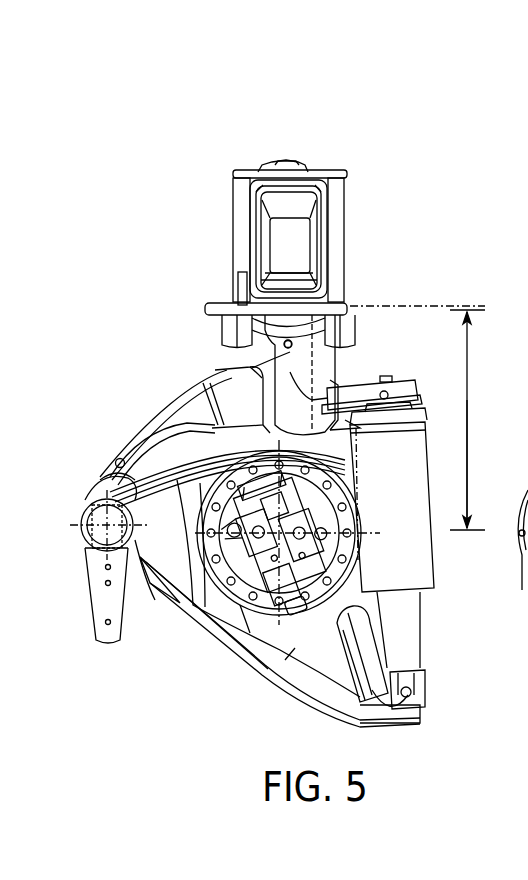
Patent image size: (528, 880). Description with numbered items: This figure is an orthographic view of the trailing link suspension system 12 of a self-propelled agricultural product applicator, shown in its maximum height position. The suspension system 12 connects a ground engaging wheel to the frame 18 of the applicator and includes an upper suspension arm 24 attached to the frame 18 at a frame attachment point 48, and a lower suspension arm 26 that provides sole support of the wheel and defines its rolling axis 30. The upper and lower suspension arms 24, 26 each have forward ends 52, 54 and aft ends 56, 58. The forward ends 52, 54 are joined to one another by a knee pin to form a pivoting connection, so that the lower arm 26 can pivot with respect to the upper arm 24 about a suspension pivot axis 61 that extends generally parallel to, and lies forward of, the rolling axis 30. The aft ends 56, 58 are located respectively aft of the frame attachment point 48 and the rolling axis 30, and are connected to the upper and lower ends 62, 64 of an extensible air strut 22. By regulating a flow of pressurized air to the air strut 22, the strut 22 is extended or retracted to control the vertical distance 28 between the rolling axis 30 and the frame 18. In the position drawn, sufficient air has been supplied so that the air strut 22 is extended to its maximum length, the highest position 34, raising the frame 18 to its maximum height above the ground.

The trailing link suspension system 12 is at (146, 374).
The frame 18 is at (342, 220).
The extensible air strut 22 is at (418, 578).
The upper suspension arm 24 is at (315, 352).
The lower suspension arm 26 is at (247, 650).
The vertical distance 28 is at (468, 395).
The rolling axis 30 is at (326, 553).
The highest position 34 is at (468, 462).
The frame attachment point 48 is at (275, 336).
The forward end of the upper suspension arm 52 is at (105, 495).
The forward end of the lower suspension arm 54 is at (132, 578).
The aft end of the upper suspension arm 56 is at (405, 392).
The aft end of the lower suspension arm 58 is at (400, 716).
The suspension pivot axis 61 is at (100, 528).
The upper end of the air strut 62 is at (405, 414).
The lower end of the air strut 64 is at (424, 690).